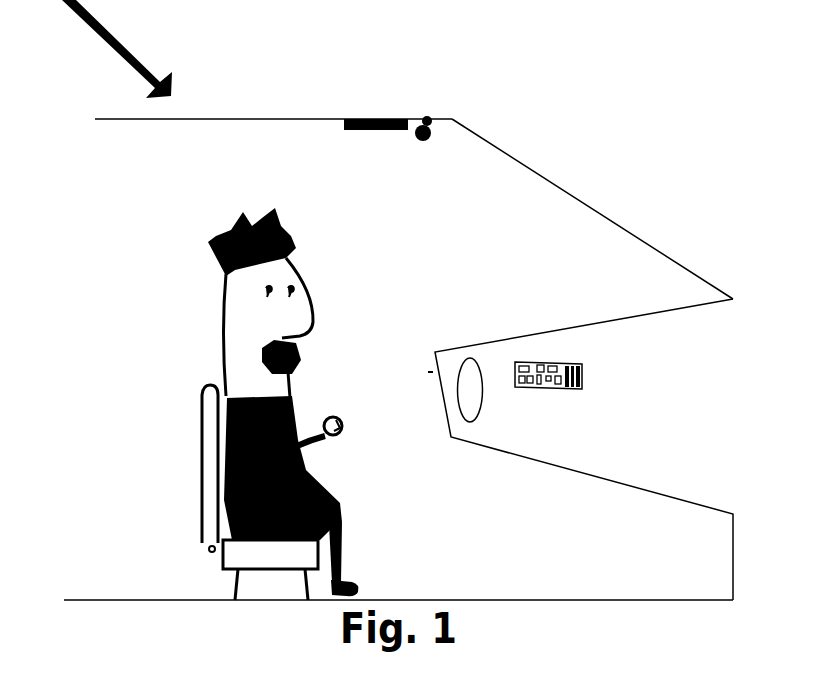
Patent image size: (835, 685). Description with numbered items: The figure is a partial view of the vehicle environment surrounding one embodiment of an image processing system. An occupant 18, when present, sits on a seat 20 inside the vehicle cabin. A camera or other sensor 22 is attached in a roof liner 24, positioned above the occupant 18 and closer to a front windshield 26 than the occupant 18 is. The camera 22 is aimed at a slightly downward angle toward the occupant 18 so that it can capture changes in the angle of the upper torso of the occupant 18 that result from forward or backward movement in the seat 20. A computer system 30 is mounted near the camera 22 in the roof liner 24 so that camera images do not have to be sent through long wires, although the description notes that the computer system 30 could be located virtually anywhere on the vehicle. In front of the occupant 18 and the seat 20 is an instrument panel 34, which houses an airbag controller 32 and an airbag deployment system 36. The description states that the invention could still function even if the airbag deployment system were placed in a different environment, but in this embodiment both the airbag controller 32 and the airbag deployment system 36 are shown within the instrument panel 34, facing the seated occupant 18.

The occupant 18 is at (225, 319).
The seat 20 is at (202, 415).
The camera or other sensor 22 is at (433, 136).
The roof liner 24 is at (242, 120).
The front windshield 26 is at (647, 243).
The computer system 30 is at (384, 128).
The airbag controller 32 is at (580, 362).
The instrument panel 34 is at (435, 352).
The airbag deployment system 36 is at (484, 405).